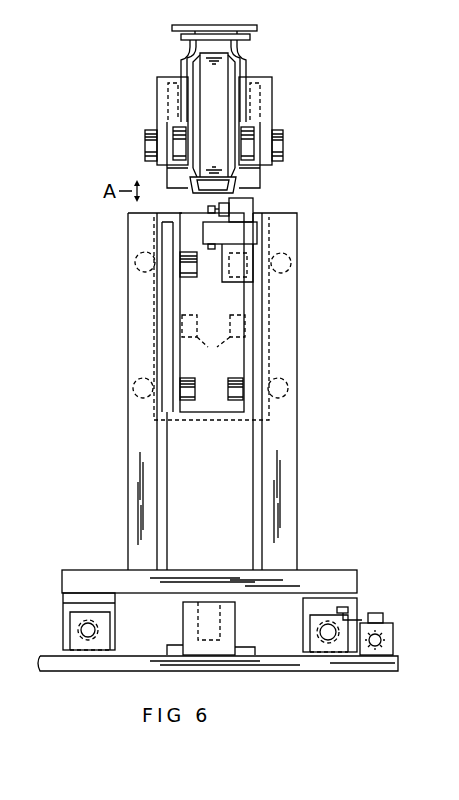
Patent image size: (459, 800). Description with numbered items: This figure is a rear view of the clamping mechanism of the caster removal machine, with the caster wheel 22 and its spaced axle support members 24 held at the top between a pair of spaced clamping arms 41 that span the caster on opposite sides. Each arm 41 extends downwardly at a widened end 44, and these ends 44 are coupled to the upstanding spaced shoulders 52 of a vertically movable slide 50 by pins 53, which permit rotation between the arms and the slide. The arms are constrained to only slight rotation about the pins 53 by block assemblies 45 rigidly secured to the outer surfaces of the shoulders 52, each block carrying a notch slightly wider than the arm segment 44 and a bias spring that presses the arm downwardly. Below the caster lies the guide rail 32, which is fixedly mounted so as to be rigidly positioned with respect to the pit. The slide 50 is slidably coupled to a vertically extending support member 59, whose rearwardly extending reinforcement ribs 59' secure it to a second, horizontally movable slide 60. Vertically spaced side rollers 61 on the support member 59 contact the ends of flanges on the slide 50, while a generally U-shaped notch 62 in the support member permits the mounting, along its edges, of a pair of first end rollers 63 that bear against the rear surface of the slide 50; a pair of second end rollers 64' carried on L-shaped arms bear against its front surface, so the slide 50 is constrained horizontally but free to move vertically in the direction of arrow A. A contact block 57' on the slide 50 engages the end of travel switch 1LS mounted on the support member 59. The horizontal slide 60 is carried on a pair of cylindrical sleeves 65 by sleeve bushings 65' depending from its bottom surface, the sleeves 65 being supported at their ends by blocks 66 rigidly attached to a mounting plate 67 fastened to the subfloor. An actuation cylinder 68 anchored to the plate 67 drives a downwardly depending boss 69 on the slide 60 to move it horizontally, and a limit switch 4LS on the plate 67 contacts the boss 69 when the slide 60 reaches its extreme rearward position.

The axle support member 24 is at (250, 50).
The caster wheel 22 is at (226, 117).
The clamping arm 41 is at (162, 86).
The block assembly 45 is at (272, 98).
The widened end 44 is at (254, 134).
The pin 53 is at (283, 145).
The shoulder 52 is at (272, 170).
The guide rail 32 is at (236, 182).
The end of travel switch 1LS is at (253, 208).
The contact block 57' is at (275, 252).
The side roller 61 is at (288, 381).
The first end roller 63 is at (232, 277).
The slide 50 is at (184, 355).
The U-shaped notch 62 is at (240, 355).
The second end roller 64' is at (213, 342).
The support member 59 is at (235, 391).
The reinforcement rib 59' is at (207, 391).
The slide 60 is at (322, 566).
The cylindrical sleeve 65 is at (67, 621).
The block 66 is at (70, 632).
The boss 69 is at (198, 623).
The actuation cylinder 68 is at (236, 625).
The sleeve bushing 65' is at (357, 610).
The limit switch 4LS is at (385, 615).
The mounting plate 67 is at (398, 660).